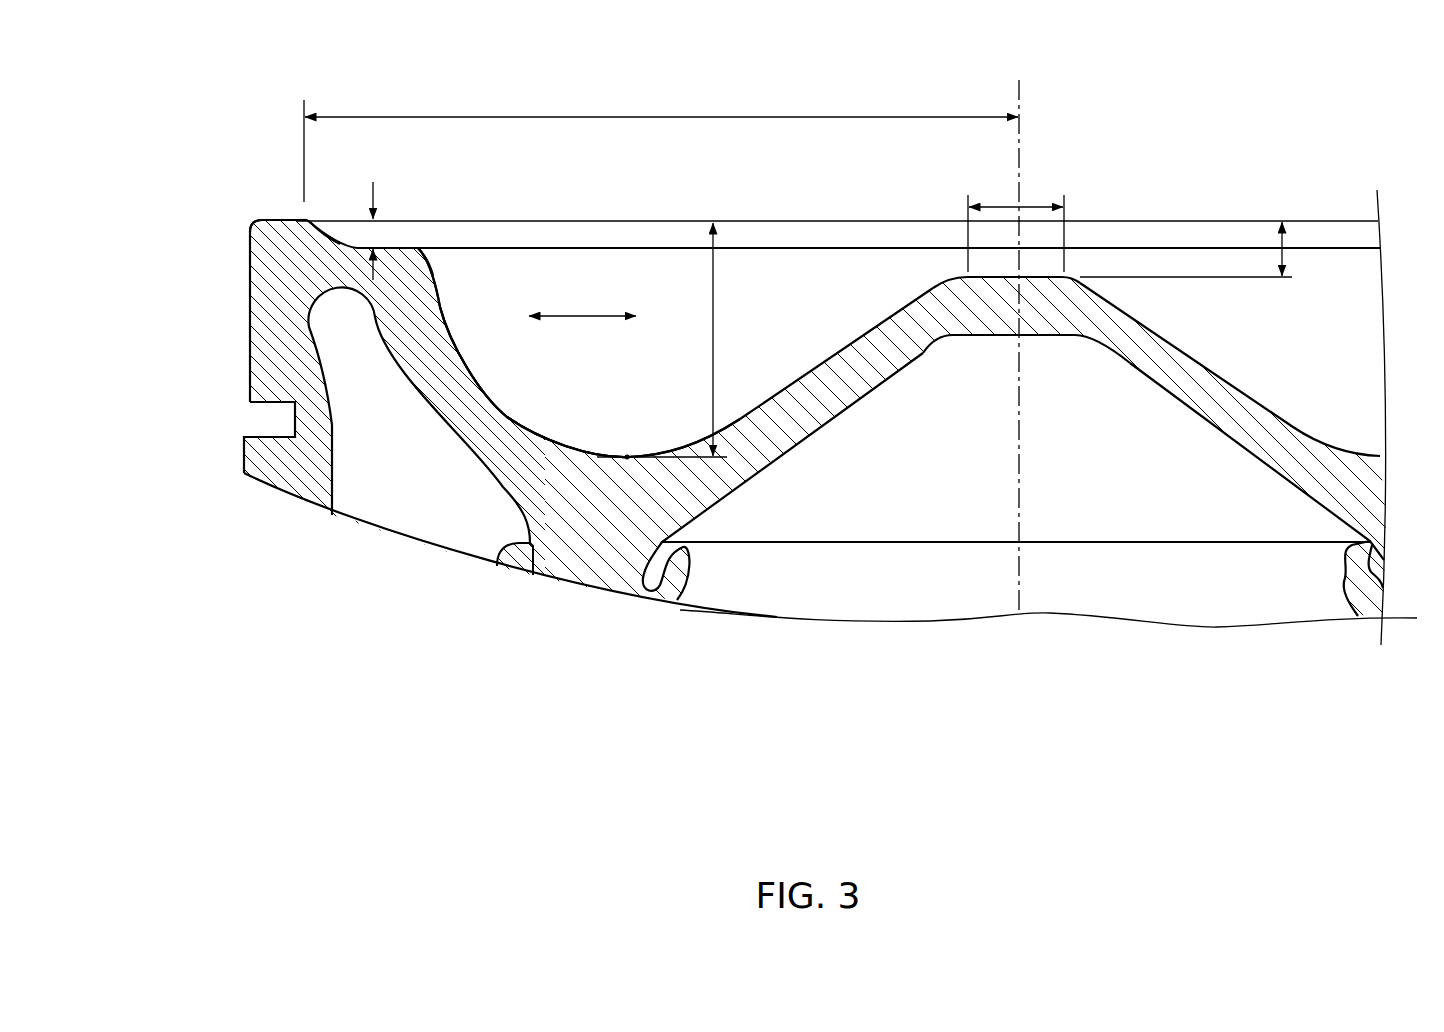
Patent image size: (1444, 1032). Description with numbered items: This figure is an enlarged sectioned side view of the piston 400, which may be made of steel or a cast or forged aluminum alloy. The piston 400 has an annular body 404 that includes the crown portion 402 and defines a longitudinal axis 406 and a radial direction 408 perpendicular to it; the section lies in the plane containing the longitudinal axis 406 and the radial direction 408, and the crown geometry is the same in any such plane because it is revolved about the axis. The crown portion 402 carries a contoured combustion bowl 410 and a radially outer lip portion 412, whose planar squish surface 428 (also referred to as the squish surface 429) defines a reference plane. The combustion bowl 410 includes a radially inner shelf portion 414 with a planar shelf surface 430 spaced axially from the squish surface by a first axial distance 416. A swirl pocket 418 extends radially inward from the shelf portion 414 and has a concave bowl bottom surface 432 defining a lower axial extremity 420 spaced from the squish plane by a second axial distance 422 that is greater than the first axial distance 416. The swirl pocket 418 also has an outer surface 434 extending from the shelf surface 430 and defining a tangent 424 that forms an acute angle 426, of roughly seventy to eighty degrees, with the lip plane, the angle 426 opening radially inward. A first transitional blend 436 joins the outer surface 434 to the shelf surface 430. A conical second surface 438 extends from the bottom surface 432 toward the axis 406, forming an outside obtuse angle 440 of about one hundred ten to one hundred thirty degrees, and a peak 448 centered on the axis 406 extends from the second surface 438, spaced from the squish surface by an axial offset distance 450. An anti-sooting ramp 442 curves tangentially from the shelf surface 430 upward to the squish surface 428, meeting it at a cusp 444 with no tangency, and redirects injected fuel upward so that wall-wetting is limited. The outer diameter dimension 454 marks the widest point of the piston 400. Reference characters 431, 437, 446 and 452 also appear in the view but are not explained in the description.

The piston 400 is at (990, 80).
The crown portion 402 is at (243, 234).
The annular body 404 is at (244, 380).
The longitudinal axis 406 is at (1022, 392).
The radial direction 408 is at (580, 318).
The contoured combustion bowl 410 is at (605, 297).
The radially outer lip portion 412 is at (287, 217).
The radially inner shelf portion 414 is at (393, 241).
The first axial distance 416 is at (373, 180).
The swirl pocket 418 is at (488, 371).
The lower axial extremity 420 is at (627, 459).
The second axial distance 422 is at (712, 340).
The tangent 424 is at (422, 292).
The acute angle 426 is at (443, 289).
The planar squish surface 428 is at (267, 217).
The squish surface 429 is at (298, 217).
The planar shelf surface 430 is at (408, 246).
The recess floor 431 is at (367, 237).
The bowl bottom surface 432 is at (504, 419).
The outer surface 434 is at (374, 312).
The first transitional blend 436 is at (431, 241).
The hump shoulder 437 is at (931, 287).
The second surface 438 is at (768, 400).
The outside obtuse angle 440 is at (1013, 168).
The anti-sooting ramp 442 is at (310, 231).
The cusp 444 is at (307, 217).
The rim to axis distance 446 is at (663, 117).
The peak 448 is at (1046, 259).
The axial offset distance 450 is at (1290, 255).
The hump 452 is at (1012, 277).
The outer diameter dimension 454 is at (1040, 205).